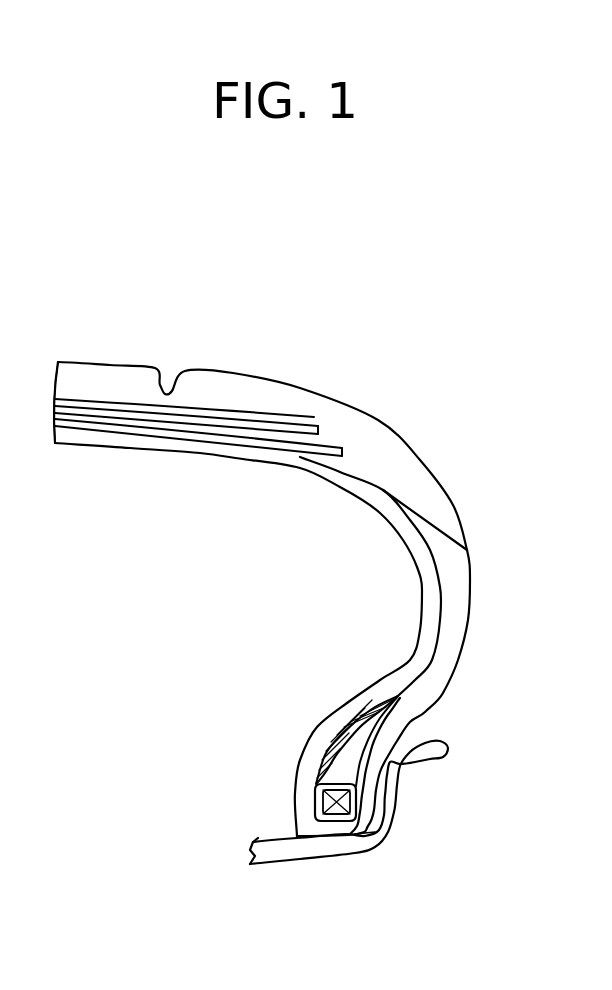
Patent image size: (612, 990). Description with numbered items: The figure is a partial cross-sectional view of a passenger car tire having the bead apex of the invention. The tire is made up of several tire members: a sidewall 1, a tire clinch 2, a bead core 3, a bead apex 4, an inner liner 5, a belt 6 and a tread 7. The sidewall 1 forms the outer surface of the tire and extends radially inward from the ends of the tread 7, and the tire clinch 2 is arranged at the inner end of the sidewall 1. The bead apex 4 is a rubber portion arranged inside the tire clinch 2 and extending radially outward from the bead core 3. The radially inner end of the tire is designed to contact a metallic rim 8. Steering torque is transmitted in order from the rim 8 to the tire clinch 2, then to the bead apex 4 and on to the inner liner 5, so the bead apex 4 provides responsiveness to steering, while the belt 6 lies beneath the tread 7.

The sidewall 1 is at (462, 590).
The tire clinch 2 is at (373, 793).
The bead core 3 is at (332, 802).
The bead apex 4 is at (352, 748).
The inner liner 5 is at (282, 458).
The belt 6 is at (177, 408).
The tread 7 is at (233, 383).
The metallic rim 8 is at (315, 846).